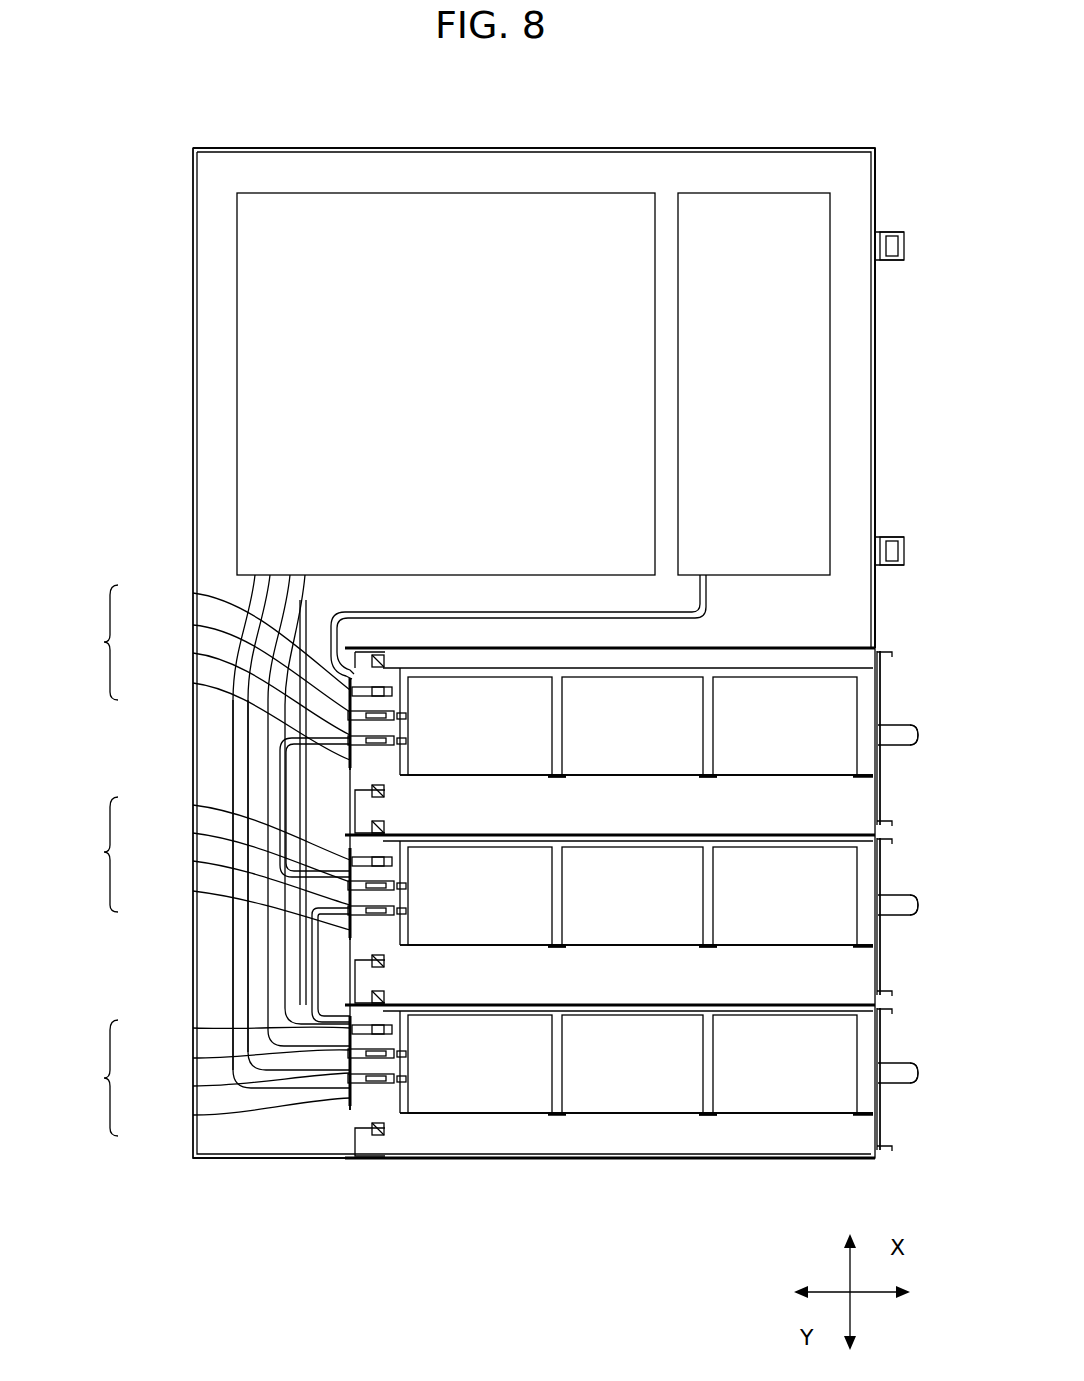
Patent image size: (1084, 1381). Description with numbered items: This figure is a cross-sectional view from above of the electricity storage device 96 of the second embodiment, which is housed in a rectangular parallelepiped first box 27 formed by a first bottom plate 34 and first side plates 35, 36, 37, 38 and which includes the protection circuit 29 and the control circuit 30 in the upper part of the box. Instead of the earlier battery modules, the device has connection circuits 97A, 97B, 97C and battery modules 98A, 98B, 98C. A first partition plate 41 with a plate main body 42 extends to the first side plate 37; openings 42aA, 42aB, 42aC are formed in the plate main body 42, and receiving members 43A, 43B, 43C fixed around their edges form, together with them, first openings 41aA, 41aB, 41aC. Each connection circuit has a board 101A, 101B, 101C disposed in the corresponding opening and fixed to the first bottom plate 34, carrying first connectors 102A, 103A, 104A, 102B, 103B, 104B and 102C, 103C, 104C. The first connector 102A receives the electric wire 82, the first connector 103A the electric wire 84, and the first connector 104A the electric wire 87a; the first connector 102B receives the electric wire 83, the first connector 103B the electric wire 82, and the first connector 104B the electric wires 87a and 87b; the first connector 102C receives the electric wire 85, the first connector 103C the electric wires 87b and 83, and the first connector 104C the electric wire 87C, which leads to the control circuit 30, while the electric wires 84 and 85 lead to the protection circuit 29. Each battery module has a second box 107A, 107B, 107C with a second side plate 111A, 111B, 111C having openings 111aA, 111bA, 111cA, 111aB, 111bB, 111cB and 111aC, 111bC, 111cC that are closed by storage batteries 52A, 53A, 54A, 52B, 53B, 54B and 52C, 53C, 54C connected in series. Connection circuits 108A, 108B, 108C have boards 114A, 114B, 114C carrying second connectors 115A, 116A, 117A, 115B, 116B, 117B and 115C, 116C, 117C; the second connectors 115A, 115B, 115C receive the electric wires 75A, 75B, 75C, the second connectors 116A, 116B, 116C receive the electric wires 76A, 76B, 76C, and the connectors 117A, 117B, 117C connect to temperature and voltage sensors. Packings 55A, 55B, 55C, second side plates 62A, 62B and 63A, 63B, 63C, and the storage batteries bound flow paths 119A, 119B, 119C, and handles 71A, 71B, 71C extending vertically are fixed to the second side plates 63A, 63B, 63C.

The electricity storage device 96 is at (212, 128).
The first box 27 is at (860, 124).
The first side plate 38 is at (385, 147).
The protection circuit 29 is at (585, 196).
The control circuit 30 is at (760, 196).
The first bottom plate 34 is at (862, 333).
The first side plate 35 is at (878, 418).
The first side plate 36 is at (193, 398).
The first side plate 37 is at (470, 1160).
The electric wire 85 is at (285, 592).
The electric wire 87C is at (372, 620).
The electric wire 87b is at (300, 744).
The electric wire 87a is at (292, 910).
The electric wire 83 is at (280, 782).
The electric wire 82 is at (258, 975).
The electric wire 84 is at (238, 995).
The first partition plate 41 is at (170, 770).
The plate main body 42 is at (355, 818).
The connection circuit 97C is at (87, 642).
The connection circuit 97B is at (87, 854).
The connection circuit 97A is at (87, 1078).
The board 101C is at (235, 635).
The first connector 104C is at (235, 662).
The first connector 102C is at (235, 687).
The first connector 103C is at (235, 715).
The board 101B is at (235, 826).
The first connector 104B is at (235, 851).
The first connector 102B is at (235, 876).
The first connector 103B is at (235, 904).
The board 101A is at (235, 1027).
The first connector 104A is at (235, 1057).
The first connector 102A is at (235, 1085).
The first connector 103A is at (235, 1112).
The board 114C is at (322, 773).
The board 114B is at (322, 948).
The board 114A is at (326, 1113).
The opening 42aC is at (328, 778).
The first opening 41aC is at (326, 772).
The opening 42aB is at (328, 952).
The first opening 41aB is at (326, 944).
The opening 42aA is at (345, 1120).
The first opening 41aA is at (330, 1112).
The storage battery 54C is at (542, 703).
The storage battery 53C is at (650, 739).
The storage battery 52C is at (802, 739).
The storage battery 54B is at (542, 873).
The storage battery 53B is at (650, 909).
The storage battery 52B is at (802, 909).
The storage battery 54A is at (542, 1041).
The storage battery 53A is at (650, 1077).
The storage battery 52A is at (802, 1077).
The second connector 117C is at (392, 688).
The second connector 115C is at (392, 716).
The second connector 116C is at (392, 742).
The electric wire 75C is at (406, 716).
The electric wire 76C is at (406, 742).
The second connector 117B is at (392, 858).
The second connector 115B is at (392, 886).
The second connector 116B is at (392, 912).
The electric wire 75B is at (406, 886).
The electric wire 76B is at (406, 912).
The second connector 117A is at (392, 1026).
The second connector 115A is at (392, 1054).
The second connector 116A is at (392, 1080).
The electric wire 75A is at (406, 1054).
The electric wire 76A is at (406, 1080).
The connection circuit 108C is at (383, 767).
The connection circuit 108B is at (383, 937).
The connection circuit 108A is at (383, 1105).
The packing 55C is at (386, 798).
The packing 55B is at (386, 968).
The packing 55A is at (380, 1138).
The receiving member 43C is at (405, 838).
The receiving member 43B is at (405, 1008).
The receiving member 43A is at (356, 1156).
The opening 111cC is at (556, 779).
The opening 111bC is at (704, 779).
The second side plate 111C is at (714, 779).
The opening 111aC is at (862, 779).
The opening 111cB is at (556, 949).
The opening 111bB is at (704, 949).
The second side plate 111B is at (714, 949).
The opening 111aB is at (862, 949).
The opening 111cA is at (556, 1117).
The opening 111bA is at (704, 1117).
The second side plate 111A is at (714, 1117).
The opening 111aA is at (862, 1117).
The flow path 119C is at (645, 816).
The flow path 119B is at (645, 986).
The flow path 119A is at (645, 1152).
The second side plate 62B is at (560, 836).
The second side plate 62A is at (560, 1006).
The second box 107C is at (882, 683).
The battery module 98C is at (882, 720).
The handle 71C is at (916, 738).
The second side plate 63C is at (880, 795).
The second box 107B is at (882, 853).
The battery module 98B is at (882, 890).
The handle 71B is at (916, 908).
The second side plate 63B is at (880, 965).
The second box 107A is at (882, 1023).
The battery module 98A is at (882, 1060).
The handle 71A is at (916, 1076).
The second side plate 63A is at (880, 1135).